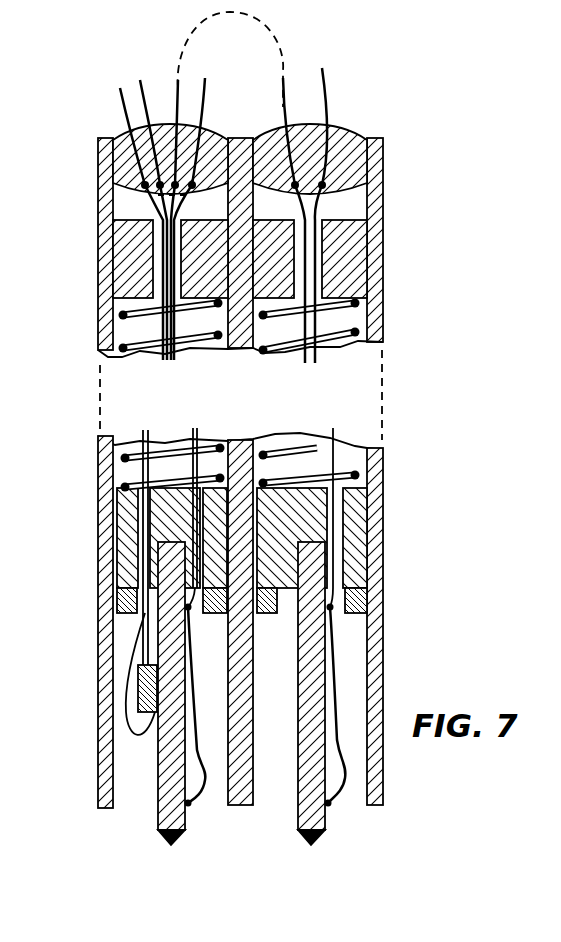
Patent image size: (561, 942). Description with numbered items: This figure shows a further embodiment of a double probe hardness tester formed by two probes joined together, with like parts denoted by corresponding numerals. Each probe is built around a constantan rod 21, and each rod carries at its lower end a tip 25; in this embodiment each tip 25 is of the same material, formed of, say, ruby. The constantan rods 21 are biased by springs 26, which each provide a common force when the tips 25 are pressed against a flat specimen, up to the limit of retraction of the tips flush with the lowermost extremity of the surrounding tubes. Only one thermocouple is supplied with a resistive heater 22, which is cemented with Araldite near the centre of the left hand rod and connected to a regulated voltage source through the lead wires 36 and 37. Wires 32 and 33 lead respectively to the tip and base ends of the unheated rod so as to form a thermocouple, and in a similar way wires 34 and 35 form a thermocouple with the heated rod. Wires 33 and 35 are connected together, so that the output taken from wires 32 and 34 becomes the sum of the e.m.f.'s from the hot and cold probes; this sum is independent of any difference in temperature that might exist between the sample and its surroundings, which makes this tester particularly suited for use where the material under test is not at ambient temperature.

The constantan rod 21 is at (163, 798).
The resistive heater 22 is at (150, 707).
The tip 25 is at (303, 838).
The spring 26 is at (122, 314).
The wire 32 is at (332, 97).
The wire 33 is at (283, 105).
The wire 34 is at (205, 78).
The wire 35 is at (176, 87).
The wire 36 is at (148, 84).
The wire 37 is at (118, 88).